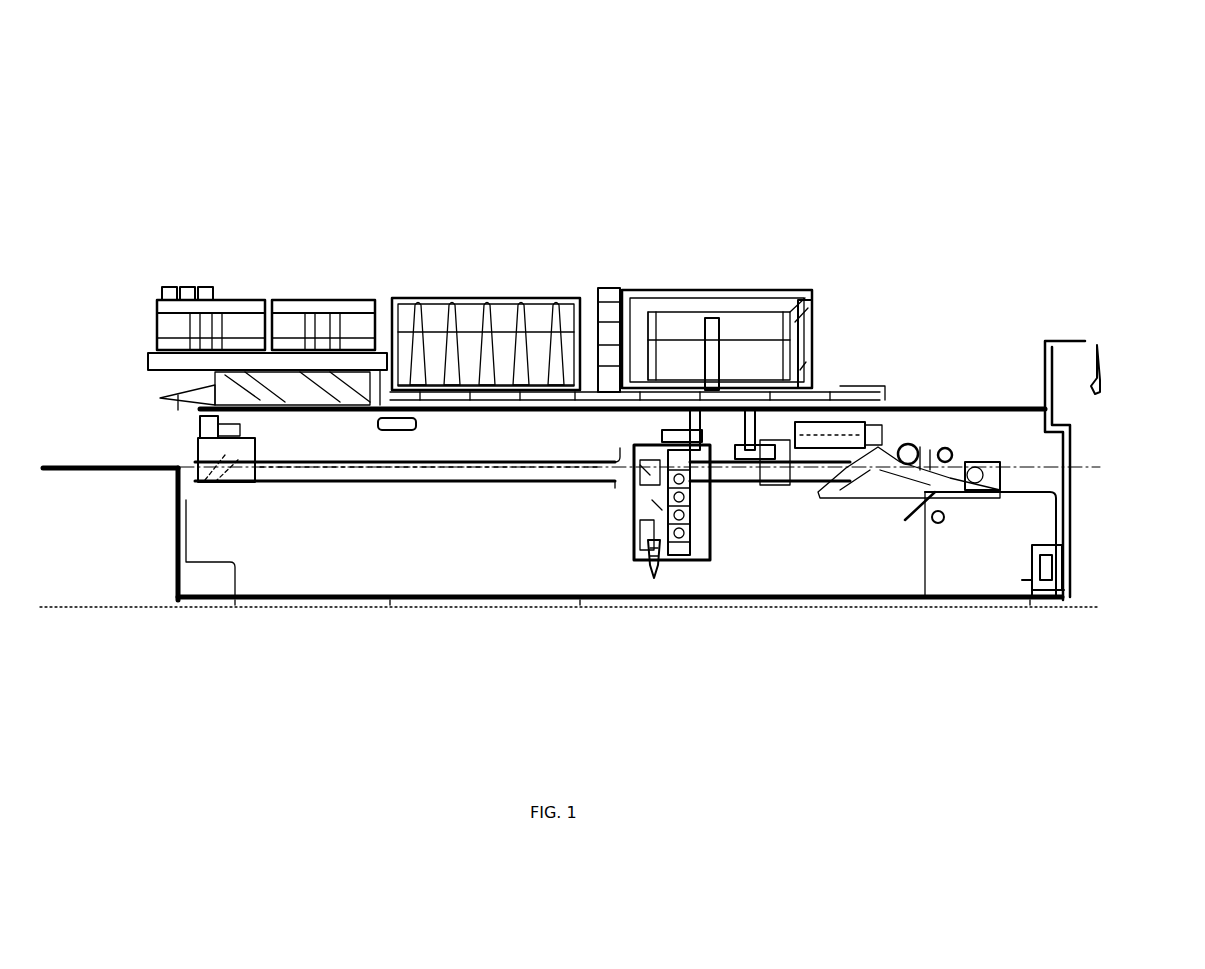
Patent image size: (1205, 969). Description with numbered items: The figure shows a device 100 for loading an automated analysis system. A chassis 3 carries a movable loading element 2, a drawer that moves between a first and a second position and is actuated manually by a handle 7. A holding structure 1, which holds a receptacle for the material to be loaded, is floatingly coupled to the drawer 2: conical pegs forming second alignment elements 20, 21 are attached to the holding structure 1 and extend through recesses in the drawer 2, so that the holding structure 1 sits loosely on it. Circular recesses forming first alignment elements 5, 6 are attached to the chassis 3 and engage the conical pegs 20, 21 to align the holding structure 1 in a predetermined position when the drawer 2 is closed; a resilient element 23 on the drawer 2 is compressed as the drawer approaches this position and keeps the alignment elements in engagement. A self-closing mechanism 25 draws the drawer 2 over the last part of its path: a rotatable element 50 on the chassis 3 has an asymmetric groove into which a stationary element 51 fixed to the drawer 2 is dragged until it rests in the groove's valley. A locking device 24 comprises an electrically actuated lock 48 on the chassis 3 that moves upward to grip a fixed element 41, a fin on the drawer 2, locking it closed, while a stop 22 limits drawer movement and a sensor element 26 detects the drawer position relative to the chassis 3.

The container processing system 100 is at (1118, 160).
The holding structure 1 is at (873, 392).
The movable loading element 2 is at (978, 368).
The chassis 3 is at (852, 568).
The first alignment element 5 is at (200, 432).
The first alignment element 6 is at (775, 455).
The handle 7 is at (1097, 345).
The second alignment element 20 is at (170, 400).
The second alignment element 21 is at (748, 430).
The stop 22 is at (398, 430).
The resilient element 23 is at (310, 300).
The locking device 24 is at (672, 535).
The self-closing mechanism 25 is at (904, 397).
The sensor element 26 is at (812, 352).
The fixed element 41 is at (680, 428).
The electrically actuated lock 48 is at (642, 560).
The rotatable element 50 is at (858, 492).
The stationary element 51 is at (914, 444).